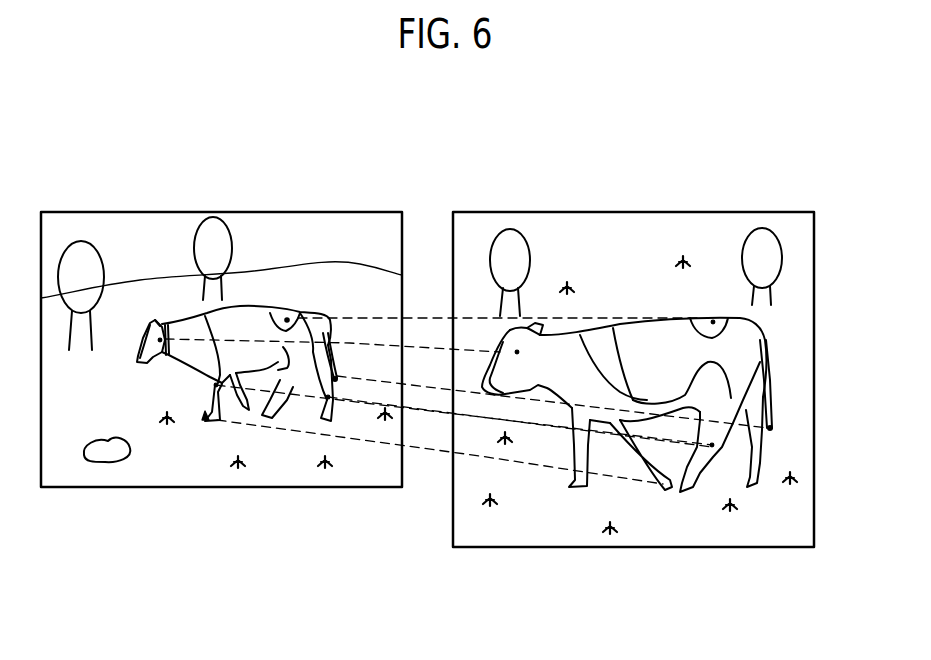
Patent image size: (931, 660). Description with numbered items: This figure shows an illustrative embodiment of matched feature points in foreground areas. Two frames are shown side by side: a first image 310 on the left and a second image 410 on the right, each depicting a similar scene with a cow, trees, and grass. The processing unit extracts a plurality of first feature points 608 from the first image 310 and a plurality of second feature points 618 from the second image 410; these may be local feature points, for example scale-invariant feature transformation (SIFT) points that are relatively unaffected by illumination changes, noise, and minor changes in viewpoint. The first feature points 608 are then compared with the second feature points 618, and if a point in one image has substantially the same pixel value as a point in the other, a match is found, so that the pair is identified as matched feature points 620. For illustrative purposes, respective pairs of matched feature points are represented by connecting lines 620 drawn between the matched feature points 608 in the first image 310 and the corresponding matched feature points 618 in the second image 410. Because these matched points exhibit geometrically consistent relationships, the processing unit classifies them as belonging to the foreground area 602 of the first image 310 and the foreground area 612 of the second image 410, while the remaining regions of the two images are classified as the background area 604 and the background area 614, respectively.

The first image 310 is at (207, 208).
The second image 410 is at (633, 208).
The foreground area 602 is at (190, 335).
The background area 604 is at (62, 467).
The first feature points 608 is at (150, 362).
The foreground area 612 is at (752, 330).
The background area 614 is at (776, 532).
The second feature points 618 is at (517, 353).
The matched feature points 620 is at (350, 373).